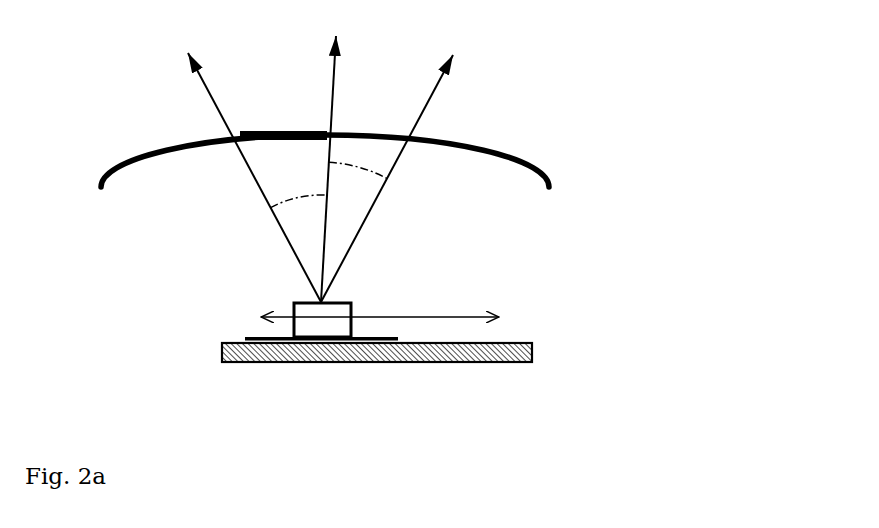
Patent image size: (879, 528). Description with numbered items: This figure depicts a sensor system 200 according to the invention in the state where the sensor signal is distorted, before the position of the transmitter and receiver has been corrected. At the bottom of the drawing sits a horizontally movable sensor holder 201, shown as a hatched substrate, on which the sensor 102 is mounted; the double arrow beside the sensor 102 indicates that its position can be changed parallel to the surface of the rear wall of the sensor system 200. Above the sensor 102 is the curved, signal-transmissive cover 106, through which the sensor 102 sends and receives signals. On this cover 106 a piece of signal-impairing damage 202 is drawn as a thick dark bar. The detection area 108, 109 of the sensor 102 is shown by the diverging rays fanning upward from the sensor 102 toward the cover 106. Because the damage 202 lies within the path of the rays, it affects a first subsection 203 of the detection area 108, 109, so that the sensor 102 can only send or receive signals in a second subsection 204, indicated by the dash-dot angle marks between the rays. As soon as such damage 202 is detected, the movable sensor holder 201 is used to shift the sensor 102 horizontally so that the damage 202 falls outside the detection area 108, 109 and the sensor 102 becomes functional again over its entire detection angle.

The sensor system 200 is at (467, 131).
The signal-transmissive cover 106 is at (185, 147).
The signal-impairing damage 202 is at (267, 142).
The detection area 108 is at (259, 187).
The detection area 109 is at (402, 158).
The first subsection 203 is at (297, 203).
The second subsection 204 is at (360, 170).
The sensor 102 is at (369, 325).
The sensor holder 201 is at (222, 357).